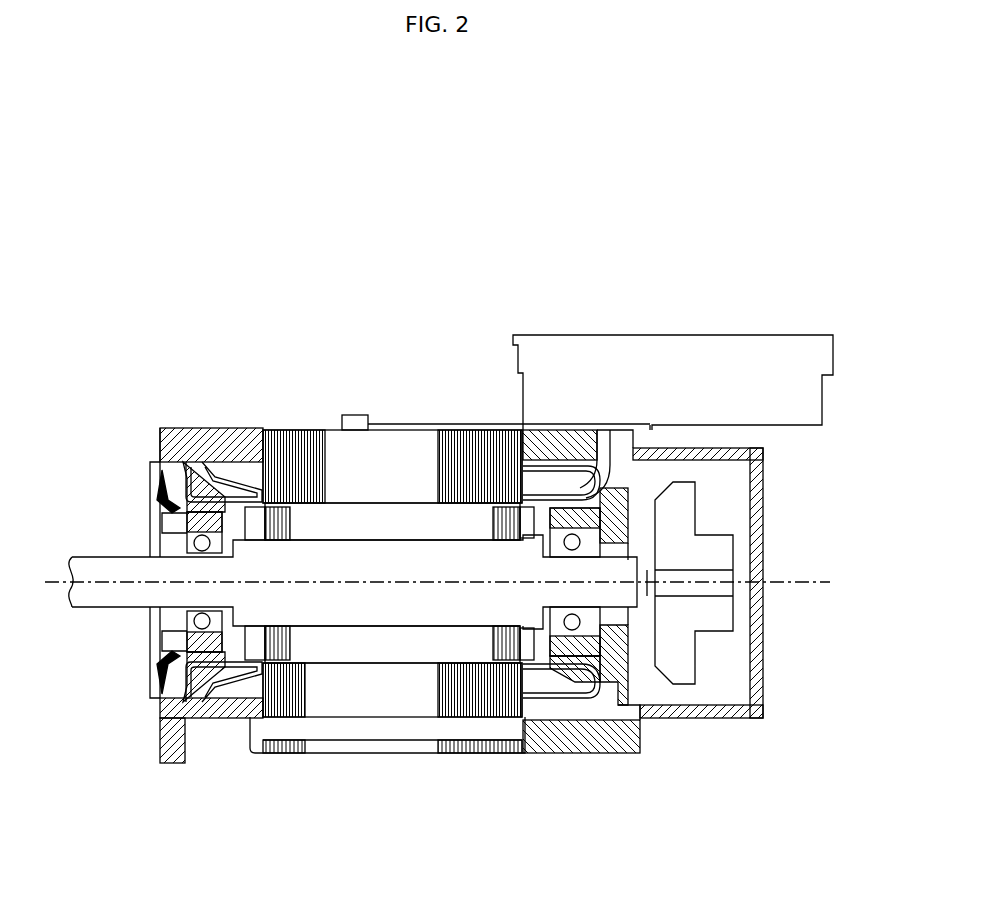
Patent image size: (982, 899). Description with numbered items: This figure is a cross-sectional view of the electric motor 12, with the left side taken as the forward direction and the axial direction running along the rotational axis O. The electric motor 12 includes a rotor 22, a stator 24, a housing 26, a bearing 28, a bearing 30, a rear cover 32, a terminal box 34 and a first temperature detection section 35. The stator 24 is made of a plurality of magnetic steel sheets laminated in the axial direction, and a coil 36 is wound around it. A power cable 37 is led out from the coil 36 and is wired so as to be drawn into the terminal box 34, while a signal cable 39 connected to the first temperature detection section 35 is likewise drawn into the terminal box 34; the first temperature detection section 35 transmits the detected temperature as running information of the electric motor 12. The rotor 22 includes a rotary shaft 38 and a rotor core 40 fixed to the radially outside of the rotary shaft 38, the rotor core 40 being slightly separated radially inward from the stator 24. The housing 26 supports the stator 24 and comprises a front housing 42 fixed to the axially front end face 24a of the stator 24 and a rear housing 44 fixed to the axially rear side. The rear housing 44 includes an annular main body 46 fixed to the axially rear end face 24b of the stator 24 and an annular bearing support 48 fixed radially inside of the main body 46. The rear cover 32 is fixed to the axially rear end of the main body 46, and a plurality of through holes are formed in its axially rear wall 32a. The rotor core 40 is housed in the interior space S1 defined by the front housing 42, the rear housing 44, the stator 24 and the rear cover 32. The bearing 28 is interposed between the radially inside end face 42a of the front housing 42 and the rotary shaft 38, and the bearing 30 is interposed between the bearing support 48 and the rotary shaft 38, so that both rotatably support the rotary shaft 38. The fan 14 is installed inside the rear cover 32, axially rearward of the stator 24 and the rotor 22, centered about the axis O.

The electric motor 12 is at (238, 233).
The fan 14 is at (718, 645).
The rotor 22 is at (389, 659).
The stator 24 is at (390, 554).
The axially front end face 24a is at (263, 430).
The axially rear end face 24b is at (530, 430).
The housing 26 is at (160, 523).
The bearing 28 is at (175, 655).
The bearing 30 is at (581, 648).
The rear cover 32 is at (743, 616).
The axially rear wall 32a is at (765, 505).
The terminal box 34 is at (712, 335).
The first temperature detection section 35 is at (353, 415).
The coil 36 is at (237, 480).
The power cable 37 is at (612, 488).
The rotary shaft 38 is at (112, 557).
The signal cable 39 is at (402, 428).
The rotor core 40 is at (372, 647).
The front housing 42 is at (197, 430).
The radially inside end face 42a is at (165, 515).
The rear housing 44 is at (609, 762).
The annular main body 46 is at (596, 462).
The annular bearing support 48 is at (633, 668).
The interior space S1 is at (246, 658).
The rotational axis O is at (451, 565).